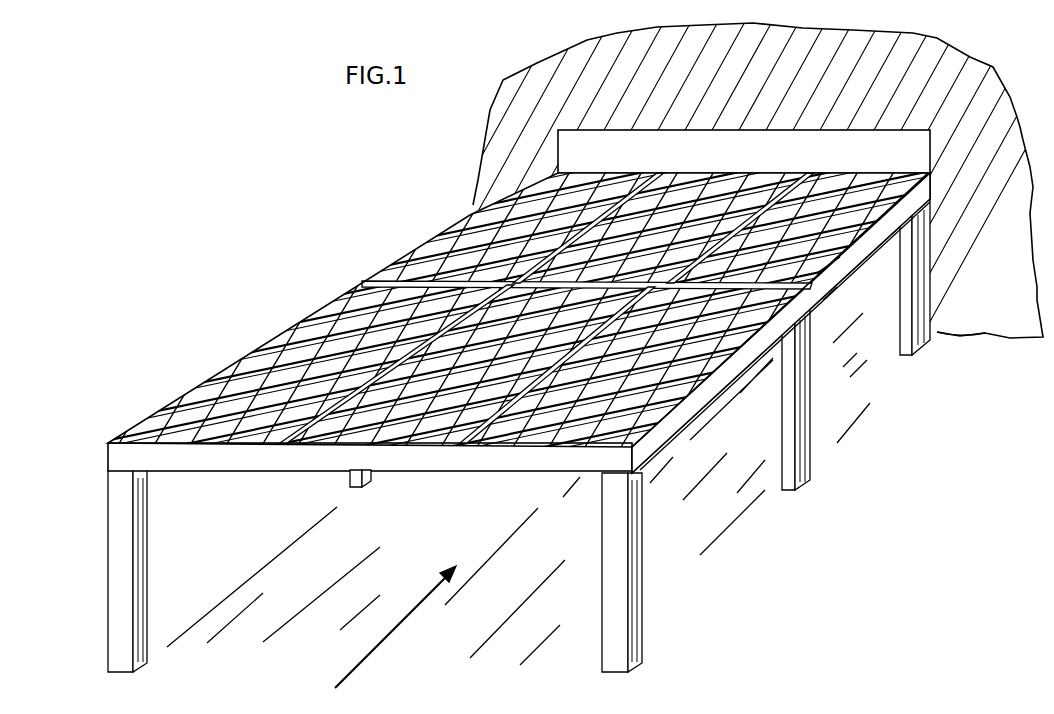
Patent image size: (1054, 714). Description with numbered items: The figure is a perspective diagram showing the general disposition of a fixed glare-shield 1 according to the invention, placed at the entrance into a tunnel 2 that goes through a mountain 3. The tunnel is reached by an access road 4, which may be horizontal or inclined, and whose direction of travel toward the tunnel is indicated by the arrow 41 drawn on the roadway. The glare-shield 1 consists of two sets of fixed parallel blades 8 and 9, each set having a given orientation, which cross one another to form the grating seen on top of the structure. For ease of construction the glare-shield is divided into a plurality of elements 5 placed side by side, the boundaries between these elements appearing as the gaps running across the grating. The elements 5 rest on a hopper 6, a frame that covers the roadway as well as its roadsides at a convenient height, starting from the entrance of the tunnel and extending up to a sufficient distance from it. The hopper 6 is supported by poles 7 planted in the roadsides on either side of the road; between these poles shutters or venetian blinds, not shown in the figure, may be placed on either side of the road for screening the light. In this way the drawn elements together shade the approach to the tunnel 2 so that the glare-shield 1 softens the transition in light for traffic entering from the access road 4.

The fixed glare-shield 1 is at (508, 328).
The tunnel 2 is at (883, 300).
The mountain 3 is at (1013, 137).
The access road 4 is at (280, 577).
The direction arrow 41 is at (398, 623).
The elements 5 is at (166, 410).
The hopper 6 is at (266, 470).
The poles 7 is at (108, 522).
The fixed parallel blades 8 is at (248, 392).
The fixed parallel blades 9 is at (337, 338).